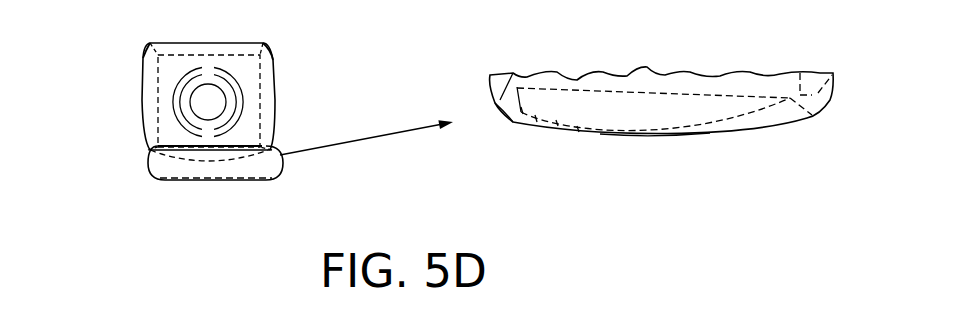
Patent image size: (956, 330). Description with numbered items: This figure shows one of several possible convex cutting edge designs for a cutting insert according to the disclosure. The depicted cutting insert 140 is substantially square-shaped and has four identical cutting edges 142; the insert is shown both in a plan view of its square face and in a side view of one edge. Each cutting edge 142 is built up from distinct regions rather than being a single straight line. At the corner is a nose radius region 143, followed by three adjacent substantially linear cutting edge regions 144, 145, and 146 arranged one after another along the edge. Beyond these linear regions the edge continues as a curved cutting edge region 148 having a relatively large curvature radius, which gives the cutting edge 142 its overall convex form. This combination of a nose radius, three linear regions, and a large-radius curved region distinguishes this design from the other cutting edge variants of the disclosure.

The cutting insert 140 is at (122, 139).
The cutting edge 142 is at (232, 42).
The nose radius region 143 is at (150, 46).
The substantially linear cutting edge region 144 is at (527, 122).
The substantially linear cutting edge region 145 is at (543, 125).
The substantially linear cutting edge region 146 is at (562, 128).
The curved cutting edge region 148 is at (658, 135).